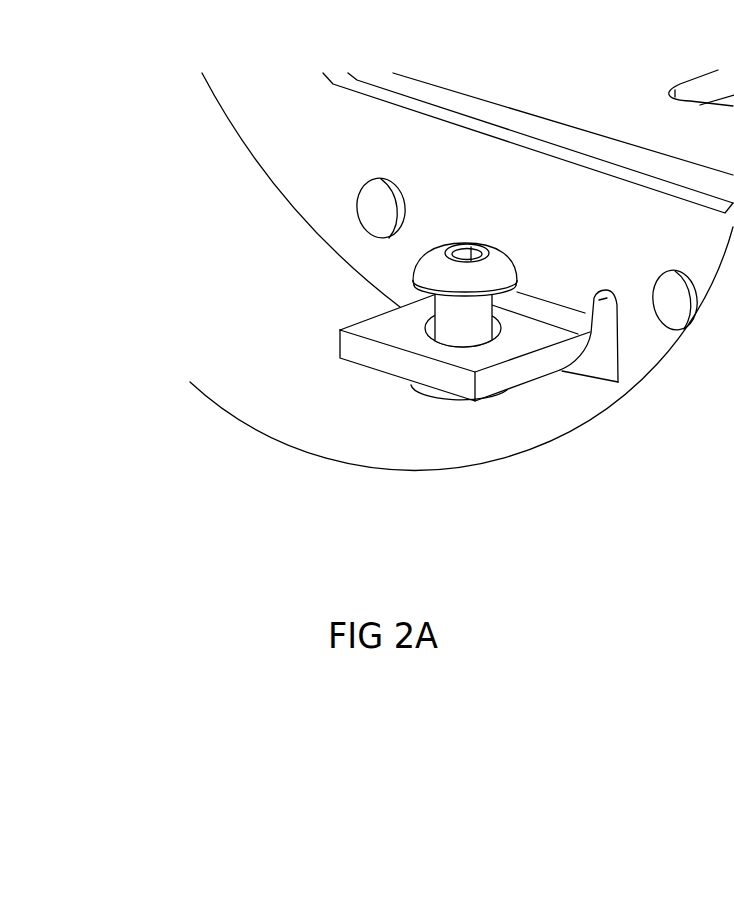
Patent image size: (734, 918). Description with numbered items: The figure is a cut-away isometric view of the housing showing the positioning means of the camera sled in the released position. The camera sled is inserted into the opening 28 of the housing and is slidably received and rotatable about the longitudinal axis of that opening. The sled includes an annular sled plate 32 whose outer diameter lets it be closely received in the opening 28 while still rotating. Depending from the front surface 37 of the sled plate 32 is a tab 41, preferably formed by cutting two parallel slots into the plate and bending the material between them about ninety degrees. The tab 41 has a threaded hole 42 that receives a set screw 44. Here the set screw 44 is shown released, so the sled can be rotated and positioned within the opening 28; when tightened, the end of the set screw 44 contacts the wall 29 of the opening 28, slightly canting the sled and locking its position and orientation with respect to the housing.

The opening 28 is at (258, 390).
The wall 29 is at (440, 433).
The sled plate 32 is at (309, 135).
The front surface 37 is at (322, 181).
The tab 41 is at (387, 358).
The threaded hole 42 is at (427, 330).
The set screw 44 is at (497, 263).